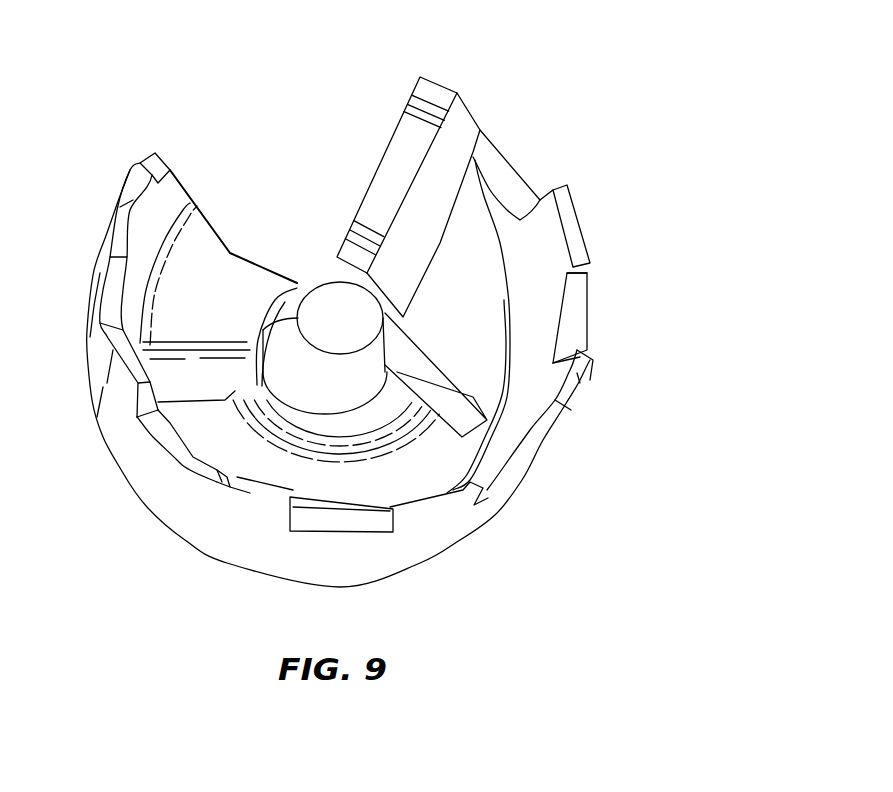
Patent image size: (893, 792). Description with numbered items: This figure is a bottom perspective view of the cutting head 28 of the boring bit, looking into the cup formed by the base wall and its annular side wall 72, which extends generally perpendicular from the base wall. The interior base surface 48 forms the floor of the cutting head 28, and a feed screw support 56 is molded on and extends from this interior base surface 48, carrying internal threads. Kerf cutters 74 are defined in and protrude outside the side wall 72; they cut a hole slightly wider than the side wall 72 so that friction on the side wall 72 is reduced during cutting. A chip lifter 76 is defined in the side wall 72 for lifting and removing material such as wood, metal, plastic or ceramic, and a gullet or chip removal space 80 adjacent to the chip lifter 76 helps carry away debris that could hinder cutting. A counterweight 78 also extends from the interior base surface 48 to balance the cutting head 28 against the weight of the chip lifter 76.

The cutting head 28 is at (690, 280).
The interior base surface 48 is at (400, 456).
The feed screw support 56 is at (312, 250).
The annular side wall 72 is at (160, 497).
The kerf cutters 74 is at (573, 227).
The chip lifter 76 is at (427, 90).
The counterweight 78 is at (224, 285).
The gullet or chip removal space 80 is at (318, 148).